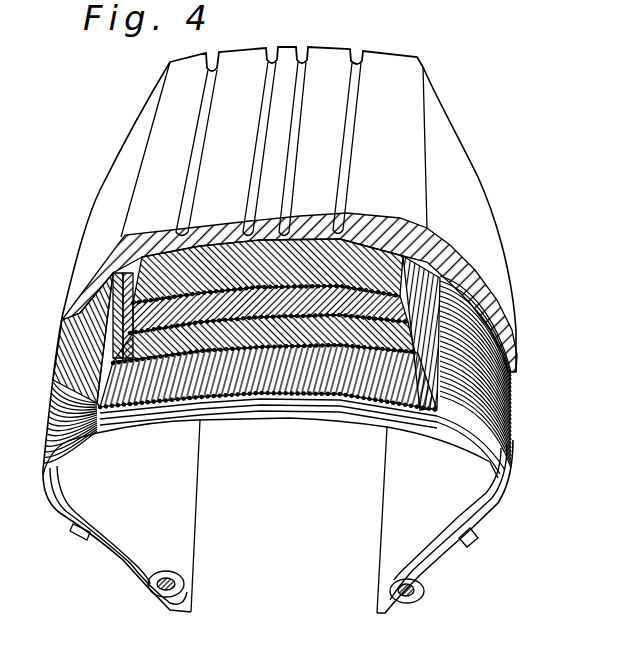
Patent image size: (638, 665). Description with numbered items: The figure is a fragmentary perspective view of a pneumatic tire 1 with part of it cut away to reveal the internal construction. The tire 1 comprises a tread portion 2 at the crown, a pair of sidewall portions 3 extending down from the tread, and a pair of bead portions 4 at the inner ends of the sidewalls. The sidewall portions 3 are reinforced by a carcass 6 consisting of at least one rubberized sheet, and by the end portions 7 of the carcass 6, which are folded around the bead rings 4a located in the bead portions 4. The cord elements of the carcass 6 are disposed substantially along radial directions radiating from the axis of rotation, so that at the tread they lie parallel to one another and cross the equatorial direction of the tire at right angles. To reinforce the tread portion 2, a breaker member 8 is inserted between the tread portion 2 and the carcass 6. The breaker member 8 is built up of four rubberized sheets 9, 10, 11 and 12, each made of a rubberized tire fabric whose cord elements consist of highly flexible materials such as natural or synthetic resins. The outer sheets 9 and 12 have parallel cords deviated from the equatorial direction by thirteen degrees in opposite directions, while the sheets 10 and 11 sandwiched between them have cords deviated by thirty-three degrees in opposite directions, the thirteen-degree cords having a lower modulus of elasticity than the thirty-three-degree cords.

The tire 1 is at (443, 100).
The tread portion 2 is at (386, 65).
The sidewall portions 3 is at (480, 182).
The bead portions 4 is at (437, 570).
The bead rings 4a is at (408, 597).
The carcass 6 is at (490, 407).
The end portions of the carcass 7 is at (453, 547).
The breaker member 8 is at (417, 317).
The rubberized sheet 9 is at (279, 312).
The rubberized sheet 10 is at (332, 328).
The rubberized sheet 11 is at (223, 300).
The rubberized sheet 12 is at (370, 230).